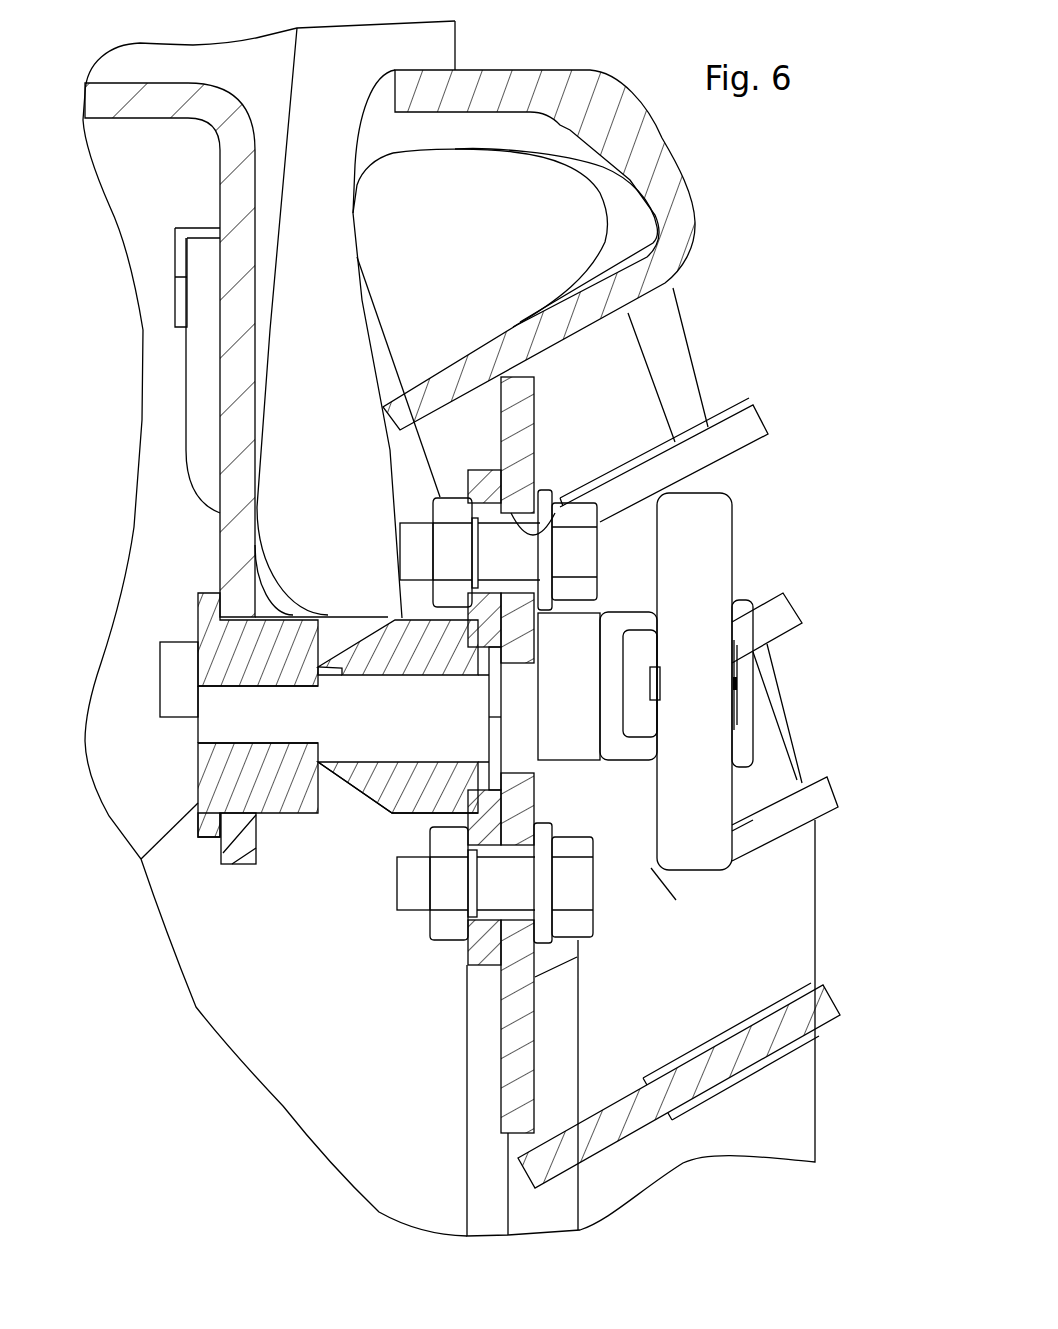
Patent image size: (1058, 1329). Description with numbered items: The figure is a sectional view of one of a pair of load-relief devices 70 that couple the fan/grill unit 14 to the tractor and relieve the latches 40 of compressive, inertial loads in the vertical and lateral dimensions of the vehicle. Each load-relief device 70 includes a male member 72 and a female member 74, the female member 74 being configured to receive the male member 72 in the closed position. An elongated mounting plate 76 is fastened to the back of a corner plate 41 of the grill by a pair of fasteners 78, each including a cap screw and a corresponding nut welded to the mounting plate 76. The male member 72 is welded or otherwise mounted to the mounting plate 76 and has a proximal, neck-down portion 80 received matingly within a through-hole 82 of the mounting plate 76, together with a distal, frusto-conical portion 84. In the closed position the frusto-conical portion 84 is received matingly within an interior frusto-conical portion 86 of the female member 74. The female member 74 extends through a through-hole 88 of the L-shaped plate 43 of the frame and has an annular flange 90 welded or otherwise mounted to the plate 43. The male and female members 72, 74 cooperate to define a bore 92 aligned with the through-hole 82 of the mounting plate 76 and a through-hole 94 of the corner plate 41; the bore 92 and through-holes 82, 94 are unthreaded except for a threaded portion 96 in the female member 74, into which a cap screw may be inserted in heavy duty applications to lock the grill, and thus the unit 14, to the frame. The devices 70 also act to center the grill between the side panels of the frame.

The fan/grill unit 14 is at (768, 488).
The latch 40 is at (188, 397).
The corner plate 41 is at (536, 406).
The L-shaped plate 43 is at (232, 866).
The load-relief device 70 is at (389, 704).
The male member 72 is at (413, 792).
The female member 74 is at (276, 817).
The mounting plate 76 is at (478, 470).
The fastener 78 is at (587, 553).
The neck-down portion 80 is at (483, 680).
The through-hole 82 is at (483, 762).
The frusto-conical portion 84 is at (327, 815).
The interior frusto-conical portion 86 is at (296, 750).
The through-hole 88 is at (228, 790).
The annular flange 90 is at (197, 840).
The bore 92 is at (333, 682).
The through-hole 94 is at (575, 506).
The threaded portion 96 is at (222, 735).